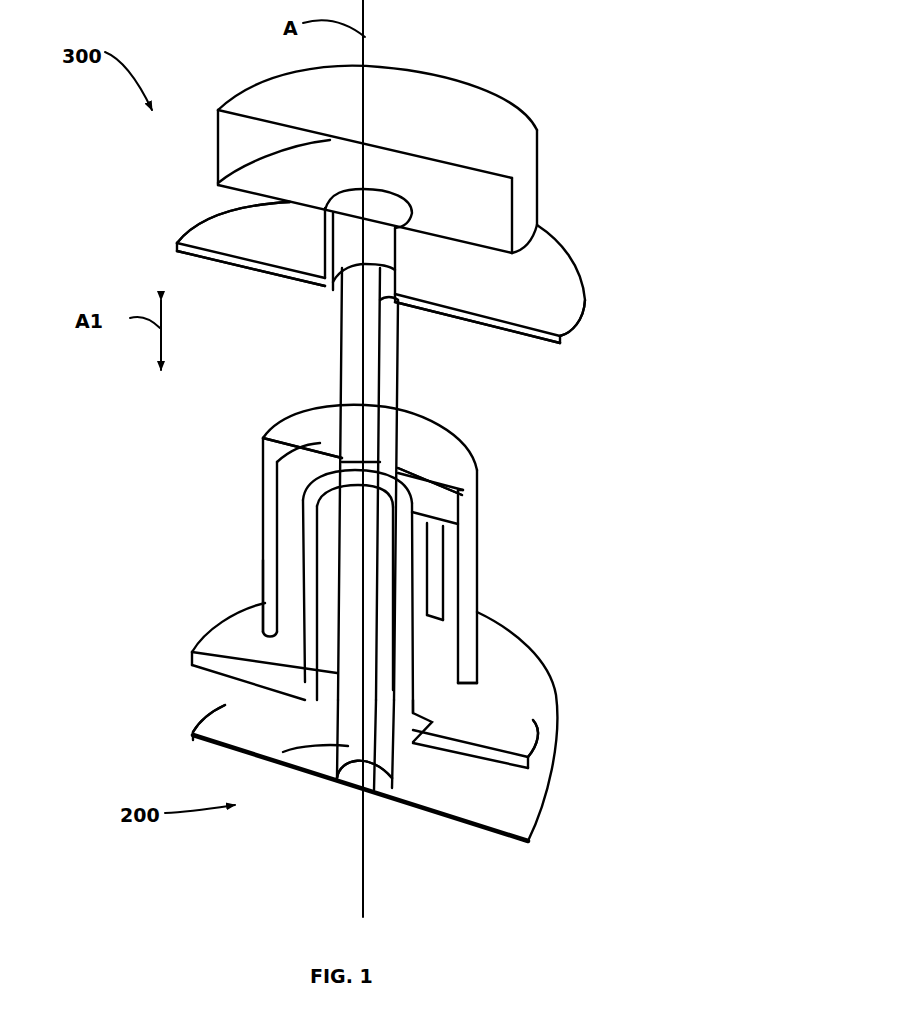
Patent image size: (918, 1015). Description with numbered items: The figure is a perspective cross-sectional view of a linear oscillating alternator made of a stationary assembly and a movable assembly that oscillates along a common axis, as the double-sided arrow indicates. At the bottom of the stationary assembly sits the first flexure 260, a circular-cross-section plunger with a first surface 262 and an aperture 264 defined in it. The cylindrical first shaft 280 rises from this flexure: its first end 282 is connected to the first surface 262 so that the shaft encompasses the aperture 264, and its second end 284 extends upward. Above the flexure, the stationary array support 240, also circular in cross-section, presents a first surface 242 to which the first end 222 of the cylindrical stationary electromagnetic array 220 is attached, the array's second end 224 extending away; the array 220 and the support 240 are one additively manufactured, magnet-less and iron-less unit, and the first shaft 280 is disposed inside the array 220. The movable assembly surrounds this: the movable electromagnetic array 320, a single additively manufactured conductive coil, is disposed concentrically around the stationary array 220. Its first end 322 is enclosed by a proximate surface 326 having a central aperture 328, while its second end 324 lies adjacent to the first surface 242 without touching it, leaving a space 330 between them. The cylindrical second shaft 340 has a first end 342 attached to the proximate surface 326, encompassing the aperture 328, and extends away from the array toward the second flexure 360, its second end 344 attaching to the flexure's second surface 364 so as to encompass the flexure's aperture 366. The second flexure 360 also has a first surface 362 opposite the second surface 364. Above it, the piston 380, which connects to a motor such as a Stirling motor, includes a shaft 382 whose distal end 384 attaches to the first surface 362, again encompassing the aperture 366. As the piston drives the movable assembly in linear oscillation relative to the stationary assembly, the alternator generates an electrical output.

The stationary circular electromagnetic array 220 is at (197, 655).
The first end of stationary array 222 is at (413, 705).
The second end of stationary array 224 is at (420, 530).
The stationary array support 240 is at (533, 760).
The first surface of stationary array support 242 is at (533, 737).
The first flexure 260 is at (525, 822).
The first surface of first flexure 262 is at (232, 724).
The aperture of first flexure 264 is at (350, 778).
The first shaft 280 is at (380, 775).
The first end of first shaft 282 is at (282, 755).
The second end of first shaft 284 is at (317, 513).
The movable circular electromagnetic array 320 is at (433, 413).
The first end of movable array 322 is at (470, 503).
The second end of movable array 324 is at (463, 667).
The proximate surface of movable array 326 is at (455, 472).
The aperture of movable array 328 is at (343, 447).
The space 330 is at (457, 692).
The second shaft 340 is at (347, 363).
The first end of second shaft 342 is at (415, 438).
The second end of second shaft 344 is at (399, 303).
The second flexure 360 is at (563, 240).
The first surface of second flexure 362 is at (558, 322).
The second surface of second flexure 364 is at (268, 271).
The aperture of second flexure 366 is at (335, 212).
The piston 380 is at (528, 115).
The piston shaft 382 is at (405, 307).
The distal end of piston shaft 384 is at (207, 250).